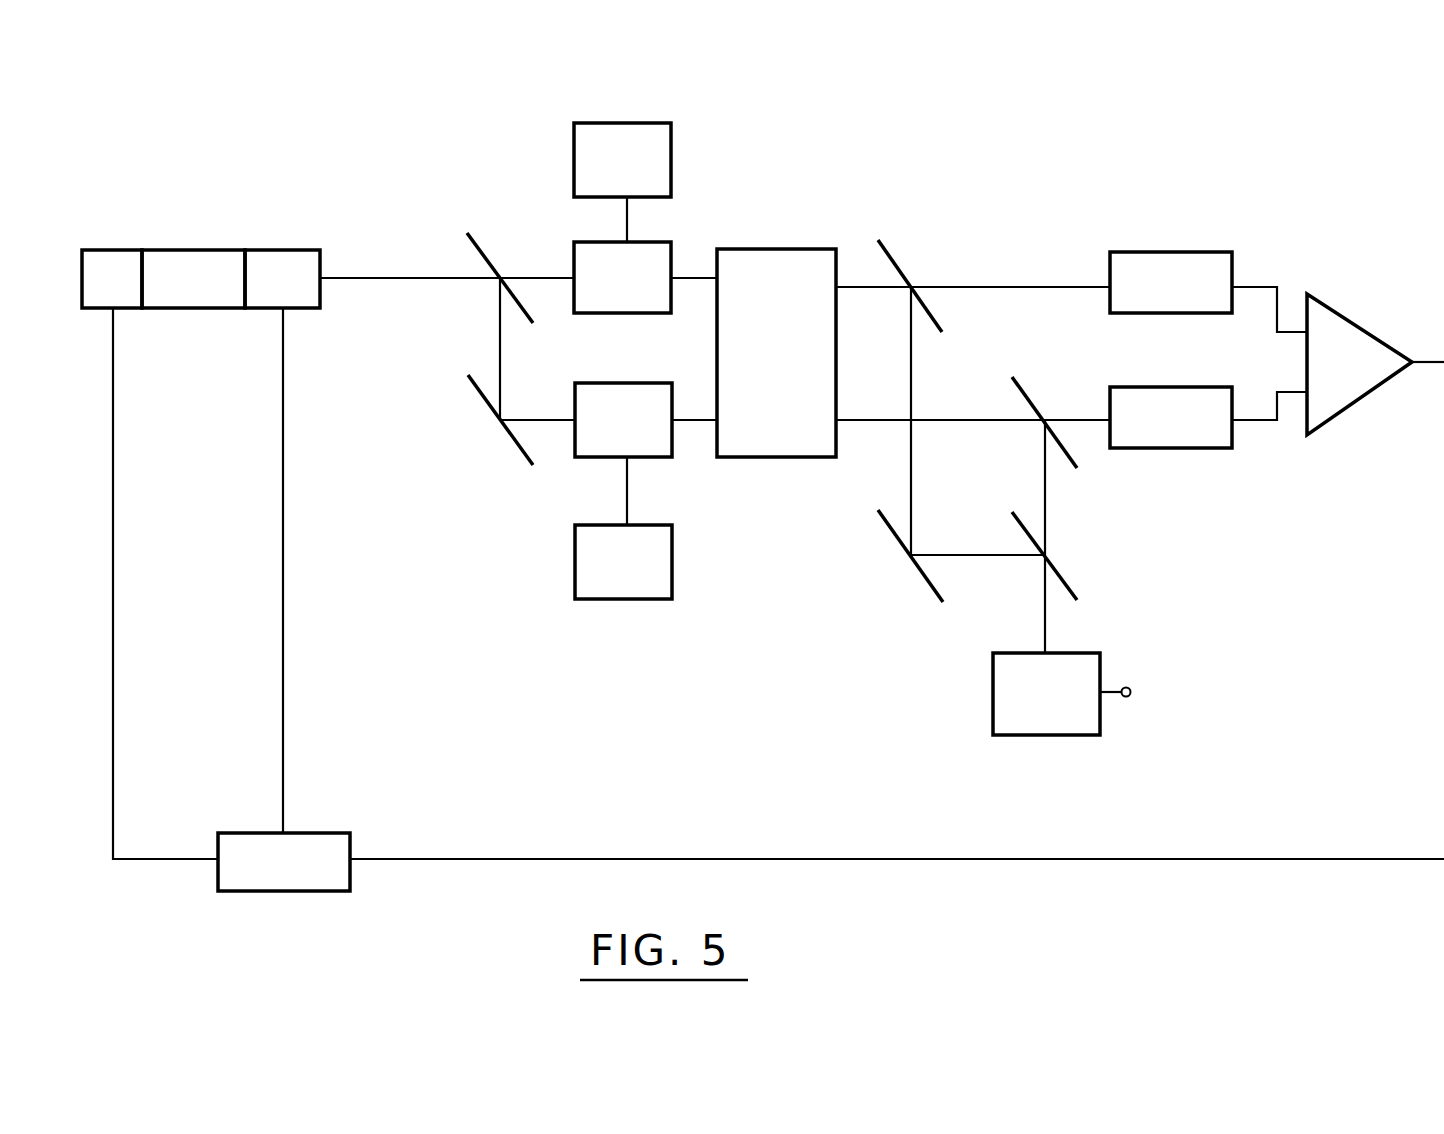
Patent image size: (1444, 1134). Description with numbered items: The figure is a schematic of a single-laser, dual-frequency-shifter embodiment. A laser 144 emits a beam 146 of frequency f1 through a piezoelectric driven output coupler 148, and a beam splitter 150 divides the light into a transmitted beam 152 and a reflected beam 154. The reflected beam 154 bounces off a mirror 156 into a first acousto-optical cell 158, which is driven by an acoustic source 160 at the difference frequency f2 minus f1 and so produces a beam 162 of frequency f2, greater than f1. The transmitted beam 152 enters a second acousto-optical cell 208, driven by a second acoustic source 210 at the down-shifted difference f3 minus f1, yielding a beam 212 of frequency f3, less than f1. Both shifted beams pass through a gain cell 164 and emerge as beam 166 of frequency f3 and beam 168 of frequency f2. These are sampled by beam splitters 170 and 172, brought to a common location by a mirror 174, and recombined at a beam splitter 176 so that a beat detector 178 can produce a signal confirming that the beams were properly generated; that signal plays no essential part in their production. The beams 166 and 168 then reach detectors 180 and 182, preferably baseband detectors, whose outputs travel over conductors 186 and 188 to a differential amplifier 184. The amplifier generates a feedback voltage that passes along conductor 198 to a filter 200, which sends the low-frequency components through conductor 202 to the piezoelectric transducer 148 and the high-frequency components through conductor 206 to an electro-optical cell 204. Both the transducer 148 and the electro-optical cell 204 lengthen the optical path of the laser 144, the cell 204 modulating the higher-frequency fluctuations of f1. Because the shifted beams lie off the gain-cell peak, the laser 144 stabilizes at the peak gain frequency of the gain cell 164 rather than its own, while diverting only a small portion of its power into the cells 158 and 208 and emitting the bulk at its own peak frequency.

The laser 144 is at (183, 258).
The beam of light 146 is at (428, 278).
The piezoelectric driven output coupler 148 is at (283, 258).
The beam splitter 150 is at (482, 247).
The transmitted beam 152 is at (523, 275).
The reflected beam 154 is at (500, 343).
The mirror 156 is at (508, 442).
The acousto-optical cell 158 is at (647, 393).
The acoustic source 160 is at (663, 553).
The beam of light 162 is at (688, 427).
The gain cell 164 is at (785, 250).
The beam 166 is at (882, 287).
The beam 168 is at (900, 420).
The beam splitter 170 is at (897, 268).
The beam splitter 172 is at (1028, 388).
The mirror 174 is at (927, 580).
The beam splitter 176 is at (1027, 522).
The beat detector 178 is at (1023, 727).
The detector 180 is at (1147, 262).
The detector 182 is at (1158, 393).
The differential amplifier 184 is at (1348, 335).
The conductor 186 is at (1267, 287).
The conductor 188 is at (1267, 422).
The conductor 198 is at (1190, 860).
The filter 200 is at (336, 872).
The conductor 202 is at (283, 578).
The electro-optical cell 204 is at (128, 258).
The conductor 206 is at (114, 548).
The second acousto-optical cell 208 is at (650, 248).
The second acoustic source 210 is at (632, 128).
The beam 212 is at (693, 278).